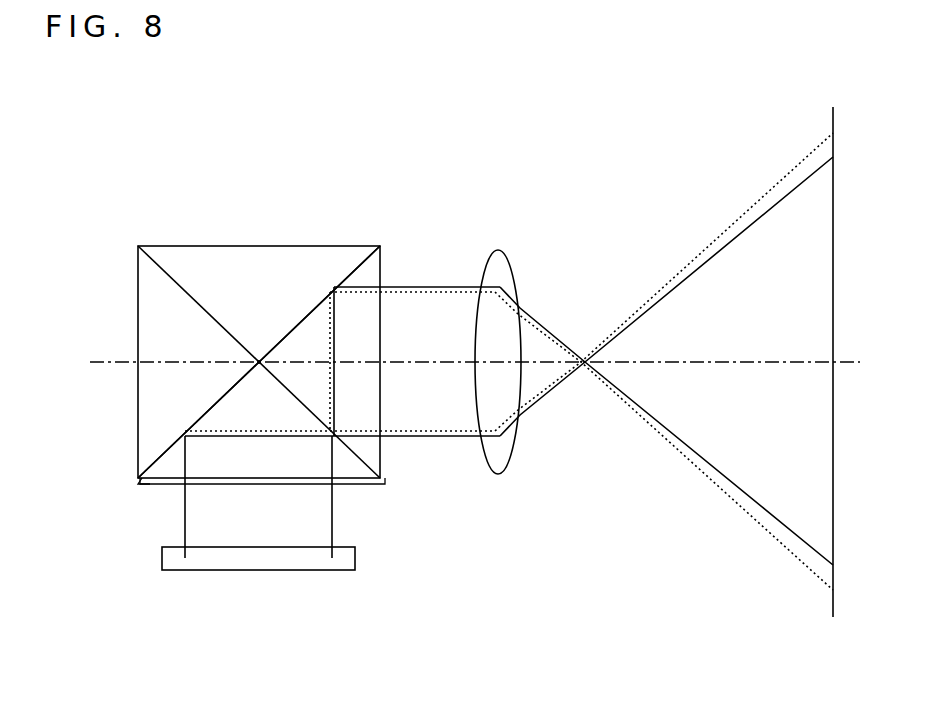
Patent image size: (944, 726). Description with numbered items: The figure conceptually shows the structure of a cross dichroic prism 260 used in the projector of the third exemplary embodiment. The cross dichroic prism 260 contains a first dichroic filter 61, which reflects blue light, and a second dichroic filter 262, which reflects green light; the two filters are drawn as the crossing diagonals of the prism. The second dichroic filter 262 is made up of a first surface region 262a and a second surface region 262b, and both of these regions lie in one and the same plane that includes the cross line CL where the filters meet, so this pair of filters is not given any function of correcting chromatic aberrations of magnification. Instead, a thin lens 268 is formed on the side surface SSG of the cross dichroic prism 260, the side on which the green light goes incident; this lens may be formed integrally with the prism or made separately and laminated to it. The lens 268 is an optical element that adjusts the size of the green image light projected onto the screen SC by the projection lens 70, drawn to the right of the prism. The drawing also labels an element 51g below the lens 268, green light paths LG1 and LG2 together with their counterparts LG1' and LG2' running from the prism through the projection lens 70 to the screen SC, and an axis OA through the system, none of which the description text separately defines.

The cross dichroic prism 260 is at (371, 243).
The first dichroic filter 61 is at (197, 289).
The second dichroic filter 262 is at (331, 290).
The first surface region 262a is at (303, 320).
The second surface region 262b is at (168, 443).
The cross line CL is at (257, 356).
The side surface SSG is at (385, 483).
The thin lens 268 is at (140, 483).
The liquid crystal light valve 51g is at (355, 559).
The first light beam LG1 is at (539, 432).
The second light beam LG2 is at (454, 360).
The first light beam (shifted) LG1' is at (664, 441).
The second light beam (shifted) LG2' is at (509, 282).
The projection lens 70 is at (498, 250).
The optical axis OA is at (738, 367).
The screen SC is at (830, 607).